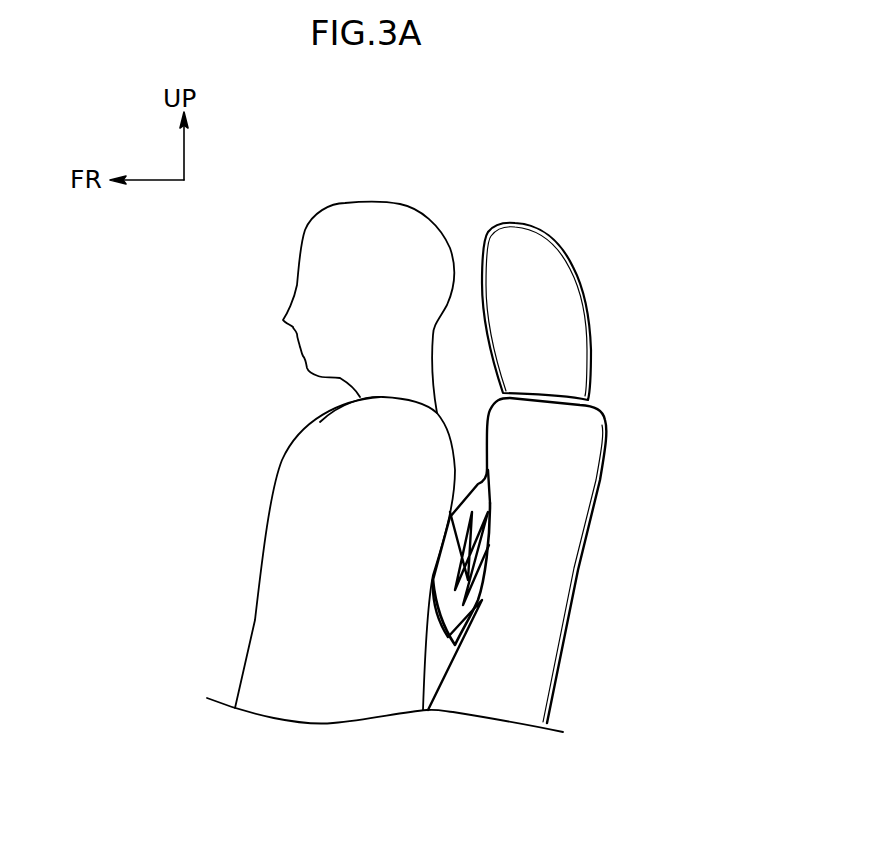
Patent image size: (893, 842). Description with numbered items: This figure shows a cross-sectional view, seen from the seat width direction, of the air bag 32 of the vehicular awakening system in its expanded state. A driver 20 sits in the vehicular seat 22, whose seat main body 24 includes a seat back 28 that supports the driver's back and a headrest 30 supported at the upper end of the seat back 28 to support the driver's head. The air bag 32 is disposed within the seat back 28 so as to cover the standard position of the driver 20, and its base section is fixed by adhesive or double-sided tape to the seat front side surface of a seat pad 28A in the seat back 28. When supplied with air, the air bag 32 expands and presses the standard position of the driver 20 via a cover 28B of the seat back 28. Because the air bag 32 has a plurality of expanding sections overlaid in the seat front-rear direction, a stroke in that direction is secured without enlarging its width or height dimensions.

The driver 20 is at (347, 203).
The vehicular seat 22 is at (638, 182).
The seat main body 24 is at (670, 298).
The seat back 28 is at (608, 430).
The seat pad 28A is at (538, 578).
The cover 28B is at (462, 473).
The headrest 30 is at (537, 225).
The air bag 32 is at (447, 595).